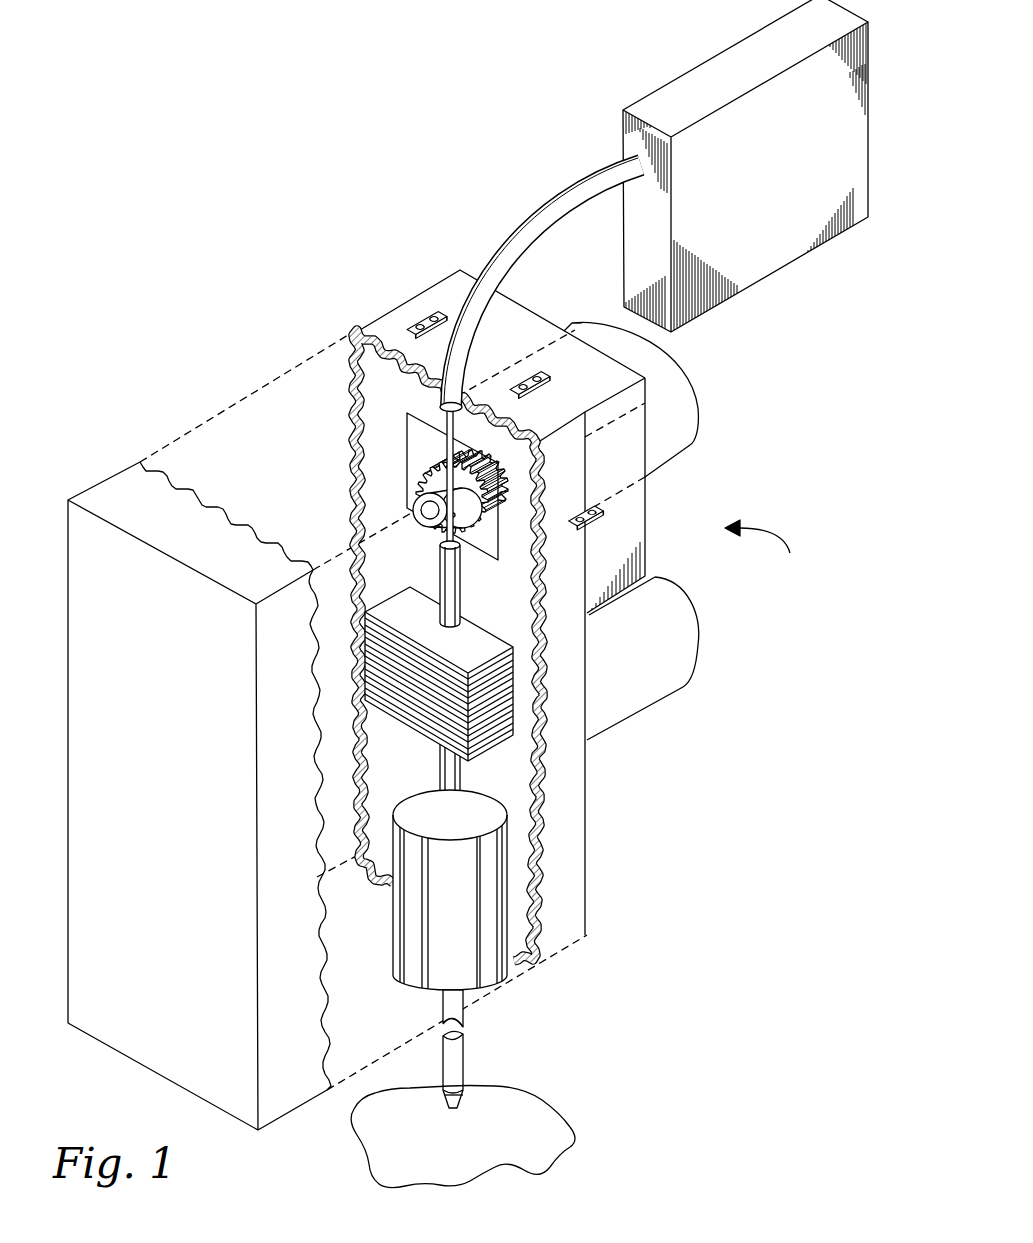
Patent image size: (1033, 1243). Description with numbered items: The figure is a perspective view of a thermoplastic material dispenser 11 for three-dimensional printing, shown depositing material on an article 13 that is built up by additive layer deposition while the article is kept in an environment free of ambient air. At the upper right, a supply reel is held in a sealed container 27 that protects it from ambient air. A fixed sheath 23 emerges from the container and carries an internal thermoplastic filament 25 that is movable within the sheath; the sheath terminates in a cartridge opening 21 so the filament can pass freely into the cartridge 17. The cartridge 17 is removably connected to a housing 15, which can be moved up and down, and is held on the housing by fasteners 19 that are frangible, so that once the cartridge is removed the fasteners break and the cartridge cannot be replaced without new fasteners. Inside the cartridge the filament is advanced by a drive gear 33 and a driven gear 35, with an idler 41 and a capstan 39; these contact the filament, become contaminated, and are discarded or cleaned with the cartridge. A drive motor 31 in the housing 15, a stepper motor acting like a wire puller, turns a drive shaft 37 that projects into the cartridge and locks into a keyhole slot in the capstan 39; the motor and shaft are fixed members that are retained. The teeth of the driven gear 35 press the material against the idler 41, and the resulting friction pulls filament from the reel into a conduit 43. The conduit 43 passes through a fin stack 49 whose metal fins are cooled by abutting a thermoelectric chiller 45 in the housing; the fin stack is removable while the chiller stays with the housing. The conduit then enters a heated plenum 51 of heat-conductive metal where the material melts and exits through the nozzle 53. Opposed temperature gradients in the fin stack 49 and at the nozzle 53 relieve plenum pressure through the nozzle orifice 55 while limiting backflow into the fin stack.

The thermoplastic material dispenser 11 is at (770, 550).
The article 13 is at (567, 1133).
The housing 15 is at (642, 506).
The cartridge 17 is at (378, 321).
The fasteners 19 is at (425, 320).
The cartridge opening 21 is at (458, 406).
The fixed sheath 23 is at (557, 205).
The thermoplastic filament 25 is at (443, 418).
The sealed container 27 is at (720, 70).
The drive motor 31 is at (664, 365).
The drive gear 33 is at (470, 465).
The driven gear 35 is at (426, 470).
The drive shaft 37 is at (422, 508).
The capstan 39 is at (426, 493).
The idler 41 is at (478, 525).
The conduit 43 is at (452, 602).
The thermoelectric chiller 45 is at (691, 649).
The fin stack 49 is at (400, 710).
The heated plenum 51 is at (507, 878).
The nozzle 53 is at (458, 1003).
The nozzle orifice 55 is at (452, 1110).